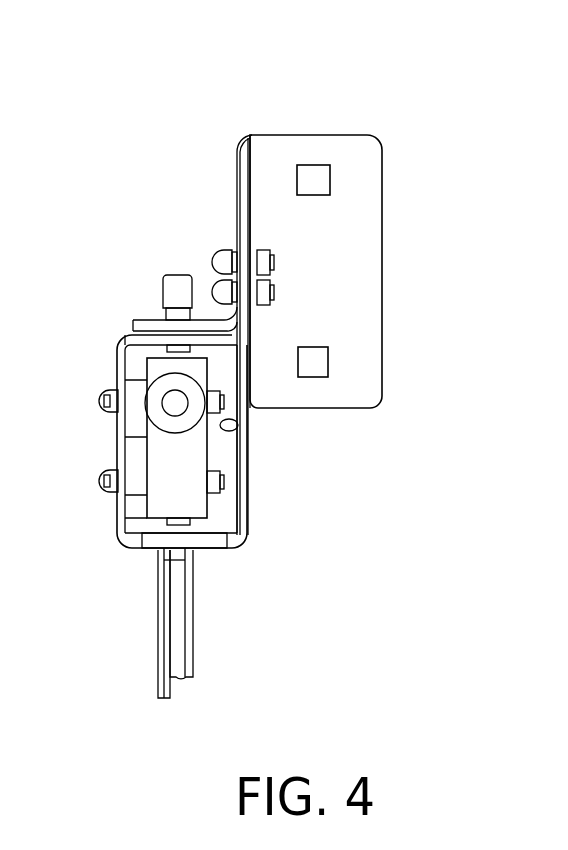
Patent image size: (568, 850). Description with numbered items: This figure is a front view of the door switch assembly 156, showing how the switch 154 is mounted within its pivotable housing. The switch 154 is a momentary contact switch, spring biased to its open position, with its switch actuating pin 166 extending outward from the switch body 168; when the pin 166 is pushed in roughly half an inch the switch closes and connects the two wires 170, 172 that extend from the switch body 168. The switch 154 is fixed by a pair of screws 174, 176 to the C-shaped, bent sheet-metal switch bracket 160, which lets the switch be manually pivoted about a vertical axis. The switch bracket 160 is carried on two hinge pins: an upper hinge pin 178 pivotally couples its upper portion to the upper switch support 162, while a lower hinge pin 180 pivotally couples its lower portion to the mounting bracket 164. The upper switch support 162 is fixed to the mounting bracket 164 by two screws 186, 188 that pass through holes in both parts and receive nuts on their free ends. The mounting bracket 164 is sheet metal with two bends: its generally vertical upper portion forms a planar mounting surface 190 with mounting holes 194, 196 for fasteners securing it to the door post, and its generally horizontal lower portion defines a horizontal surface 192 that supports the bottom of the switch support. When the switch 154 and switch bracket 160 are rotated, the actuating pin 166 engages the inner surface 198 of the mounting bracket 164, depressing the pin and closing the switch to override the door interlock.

The door switch assembly 156 is at (271, 92).
The planar mounting surface 190 is at (332, 244).
The mounting hole 194 is at (318, 178).
The mounting hole 196 is at (318, 362).
The mounting bracket 164 is at (245, 480).
The inner surface 198 is at (232, 432).
The upper switch support 162 is at (138, 322).
The upper hinge pin 178 is at (166, 318).
The switch bracket 160 is at (119, 368).
The switch body 168 is at (155, 437).
The switch 154 is at (173, 468).
The switch actuating pin 166 is at (172, 405).
The screw 174 is at (108, 400).
The screw 176 is at (108, 483).
The screw 188 is at (216, 256).
The screw 186 is at (214, 284).
The horizontal surface 192 is at (238, 530).
The wire 170 is at (158, 598).
The wire 172 is at (188, 612).
The lower hinge pin 180 is at (176, 558).